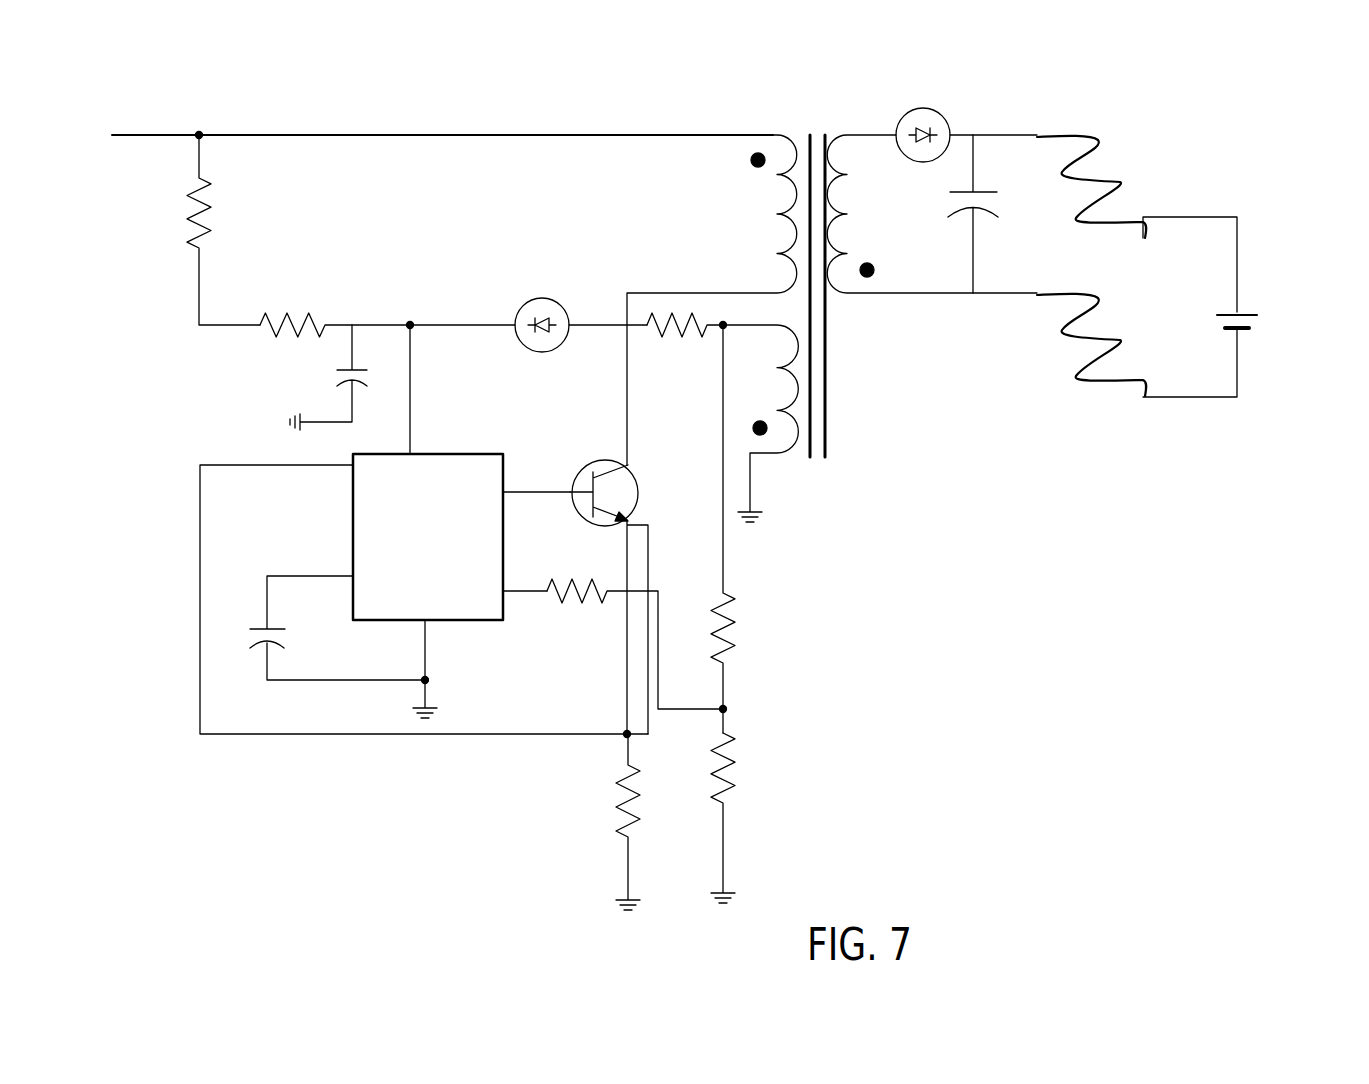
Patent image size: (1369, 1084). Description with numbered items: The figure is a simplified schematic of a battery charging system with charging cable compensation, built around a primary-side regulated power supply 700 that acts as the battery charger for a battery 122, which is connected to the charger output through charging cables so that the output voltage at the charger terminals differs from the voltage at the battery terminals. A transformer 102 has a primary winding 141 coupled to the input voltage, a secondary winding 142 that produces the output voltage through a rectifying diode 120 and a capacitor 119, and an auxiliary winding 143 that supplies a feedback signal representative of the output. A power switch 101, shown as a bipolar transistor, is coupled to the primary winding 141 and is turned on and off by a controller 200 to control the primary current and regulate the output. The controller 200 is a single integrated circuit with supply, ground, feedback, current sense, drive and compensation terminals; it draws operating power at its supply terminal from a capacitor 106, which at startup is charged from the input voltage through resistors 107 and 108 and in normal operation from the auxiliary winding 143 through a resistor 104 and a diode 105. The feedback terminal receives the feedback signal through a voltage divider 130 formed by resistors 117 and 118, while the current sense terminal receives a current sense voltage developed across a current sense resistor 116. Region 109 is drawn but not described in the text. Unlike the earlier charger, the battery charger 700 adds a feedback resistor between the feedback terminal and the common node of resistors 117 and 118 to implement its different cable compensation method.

The primary-side regulated power supply 700 is at (613, 108).
The transformer 102 is at (808, 124).
The primary winding 141 is at (775, 207).
The secondary winding 142 is at (879, 306).
The auxiliary winding 143 is at (783, 463).
The rectifying diode 120 is at (895, 108).
The capacitor 119 is at (945, 206).
The battery 122 is at (1259, 318).
The resistor 108 is at (182, 208).
The resistor 107 is at (291, 305).
The capacitor 106 is at (387, 376).
The diode 105 is at (532, 290).
The resistor 104 is at (693, 347).
The power switch 101 is at (592, 452).
The controller 200 is at (333, 518).
The cable compensation capacitor circuit 109 is at (170, 402).
The current sense resistor 116 is at (603, 798).
The resistor 117 is at (741, 646).
The resistor 118 is at (741, 783).
The voltage divider 130 is at (832, 688).